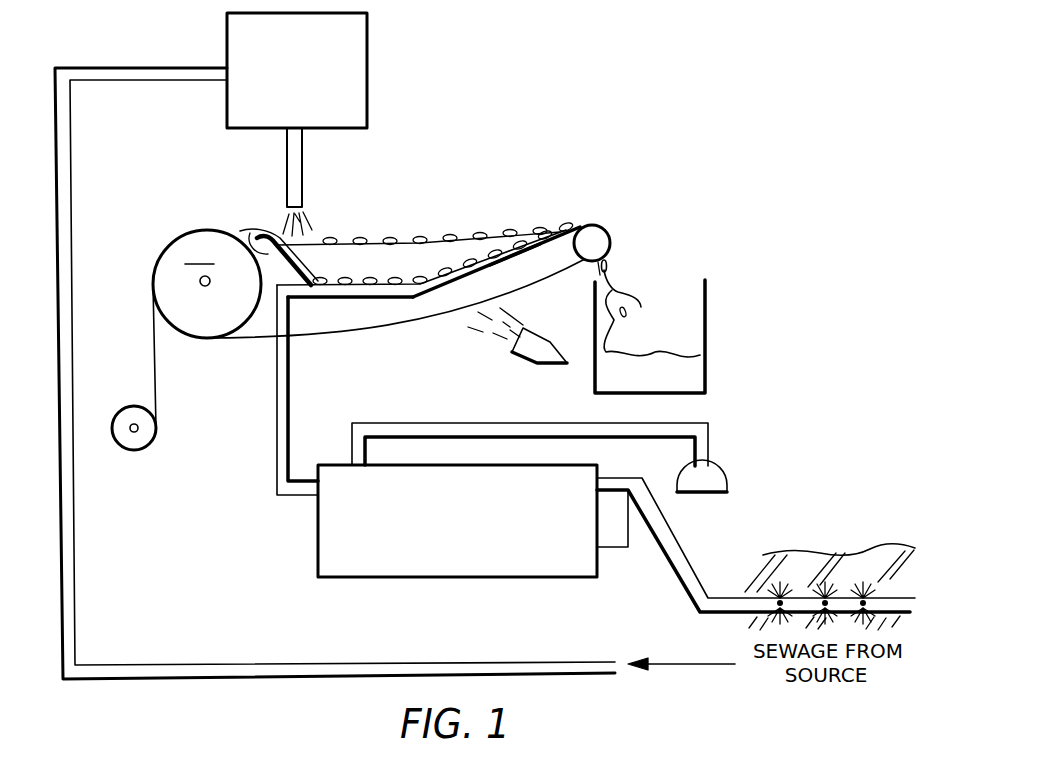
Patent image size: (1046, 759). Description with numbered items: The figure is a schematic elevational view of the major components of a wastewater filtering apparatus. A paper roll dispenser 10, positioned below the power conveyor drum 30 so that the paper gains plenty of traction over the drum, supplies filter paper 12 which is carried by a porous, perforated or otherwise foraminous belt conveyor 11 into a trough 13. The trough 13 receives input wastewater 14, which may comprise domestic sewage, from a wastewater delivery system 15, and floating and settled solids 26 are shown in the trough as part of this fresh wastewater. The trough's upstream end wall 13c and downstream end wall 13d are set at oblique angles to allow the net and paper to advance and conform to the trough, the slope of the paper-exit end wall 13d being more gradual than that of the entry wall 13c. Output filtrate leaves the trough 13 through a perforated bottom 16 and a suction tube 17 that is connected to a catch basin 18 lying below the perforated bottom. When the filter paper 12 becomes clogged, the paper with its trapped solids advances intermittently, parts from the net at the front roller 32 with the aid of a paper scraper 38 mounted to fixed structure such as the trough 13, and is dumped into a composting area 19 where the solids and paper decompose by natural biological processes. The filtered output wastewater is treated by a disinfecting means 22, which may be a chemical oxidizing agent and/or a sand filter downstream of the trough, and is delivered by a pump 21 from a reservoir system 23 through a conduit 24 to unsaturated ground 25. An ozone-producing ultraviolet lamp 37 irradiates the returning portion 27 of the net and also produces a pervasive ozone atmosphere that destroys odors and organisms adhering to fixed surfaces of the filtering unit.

The paper roll dispenser 10 is at (135, 450).
The foraminous belt conveyor 11 is at (252, 344).
The filter paper 12 is at (153, 368).
The trough 13 is at (452, 283).
The upstream end wall 13c is at (262, 243).
The downstream end wall 13d is at (510, 256).
The input wastewater 14 is at (305, 232).
The wastewater delivery system 15 is at (368, 92).
The perforated bottom 16 is at (340, 288).
The suction tube 17 is at (291, 405).
The catch basin 18 is at (381, 299).
The composting area 19 is at (706, 381).
The pump 21 is at (618, 549).
The disinfecting means 22 is at (727, 480).
The reservoir system 23 is at (450, 579).
The conduit 24 is at (681, 545).
The unsaturated ground 25 is at (845, 548).
The floating and settled solids 26 is at (346, 243).
The returning portion of the net 27 is at (462, 316).
The power conveyor drum 30 is at (207, 284).
The front roller 32 is at (602, 242).
The ozone-producing ultraviolet lamp 37 is at (553, 366).
The paper scraper 38 is at (610, 267).